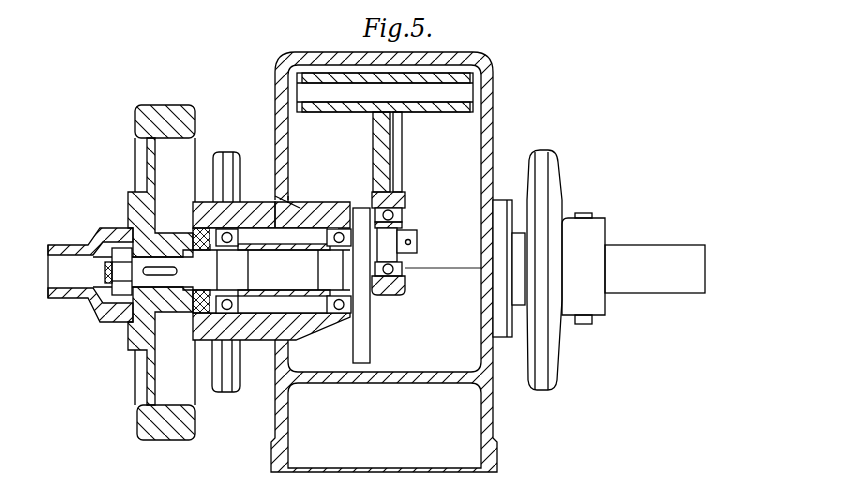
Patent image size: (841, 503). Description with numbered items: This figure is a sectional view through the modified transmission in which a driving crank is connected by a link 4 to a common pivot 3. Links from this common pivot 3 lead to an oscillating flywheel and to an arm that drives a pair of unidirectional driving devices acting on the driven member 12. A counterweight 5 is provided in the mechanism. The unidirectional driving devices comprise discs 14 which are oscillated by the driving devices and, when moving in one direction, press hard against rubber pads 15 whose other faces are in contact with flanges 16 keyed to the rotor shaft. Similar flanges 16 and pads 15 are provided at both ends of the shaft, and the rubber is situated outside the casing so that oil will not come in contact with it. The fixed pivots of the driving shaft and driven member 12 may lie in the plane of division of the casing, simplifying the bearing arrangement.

The common pivot 3 is at (355, 95).
The link 4 is at (386, 157).
The counterweight 5 is at (370, 342).
The driven member 12 is at (643, 257).
The disc 14 is at (240, 162).
The rubber pad 15 is at (223, 160).
The flange 16 is at (214, 162).